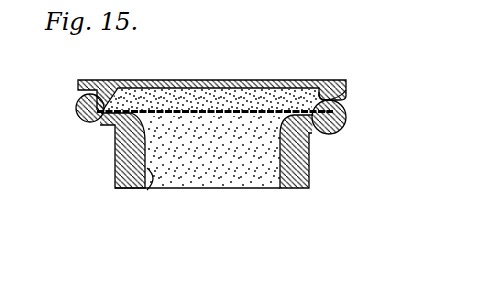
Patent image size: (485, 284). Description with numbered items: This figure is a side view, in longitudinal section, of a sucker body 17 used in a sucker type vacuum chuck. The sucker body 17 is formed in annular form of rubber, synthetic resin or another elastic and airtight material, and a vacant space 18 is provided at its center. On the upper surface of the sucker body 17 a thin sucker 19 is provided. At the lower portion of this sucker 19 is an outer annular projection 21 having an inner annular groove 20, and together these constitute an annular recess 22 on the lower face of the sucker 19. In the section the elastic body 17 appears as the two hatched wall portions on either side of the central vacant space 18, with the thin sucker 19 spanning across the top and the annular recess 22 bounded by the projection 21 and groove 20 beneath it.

The sucker body 17 is at (309, 165).
The vacant space 18 is at (148, 191).
The thin sucker 19 is at (227, 80).
The inner annular groove 20 is at (97, 126).
The outer annular projection 21 is at (346, 119).
The annular recess 22 is at (345, 91).